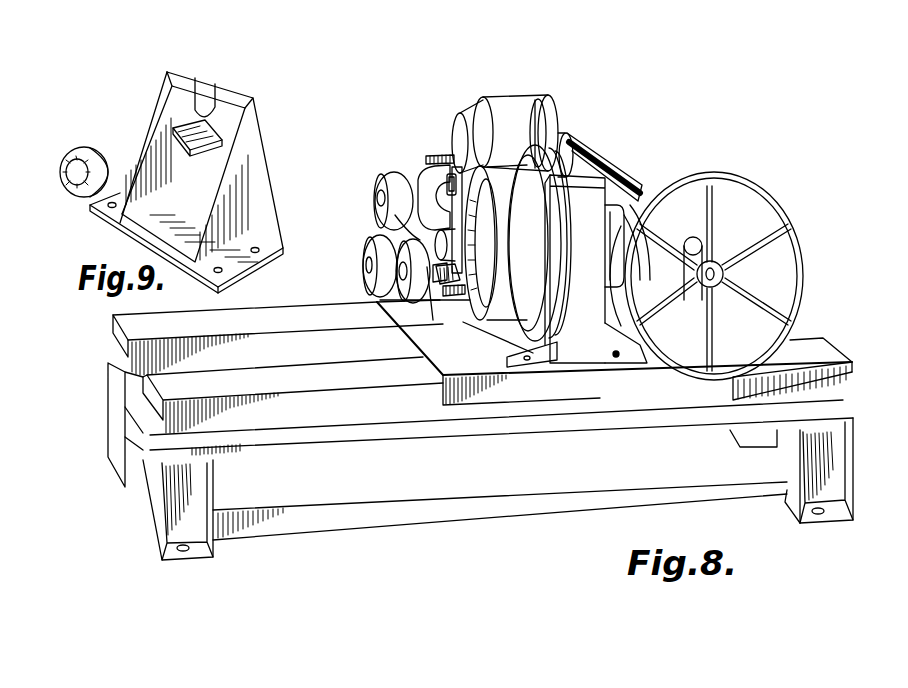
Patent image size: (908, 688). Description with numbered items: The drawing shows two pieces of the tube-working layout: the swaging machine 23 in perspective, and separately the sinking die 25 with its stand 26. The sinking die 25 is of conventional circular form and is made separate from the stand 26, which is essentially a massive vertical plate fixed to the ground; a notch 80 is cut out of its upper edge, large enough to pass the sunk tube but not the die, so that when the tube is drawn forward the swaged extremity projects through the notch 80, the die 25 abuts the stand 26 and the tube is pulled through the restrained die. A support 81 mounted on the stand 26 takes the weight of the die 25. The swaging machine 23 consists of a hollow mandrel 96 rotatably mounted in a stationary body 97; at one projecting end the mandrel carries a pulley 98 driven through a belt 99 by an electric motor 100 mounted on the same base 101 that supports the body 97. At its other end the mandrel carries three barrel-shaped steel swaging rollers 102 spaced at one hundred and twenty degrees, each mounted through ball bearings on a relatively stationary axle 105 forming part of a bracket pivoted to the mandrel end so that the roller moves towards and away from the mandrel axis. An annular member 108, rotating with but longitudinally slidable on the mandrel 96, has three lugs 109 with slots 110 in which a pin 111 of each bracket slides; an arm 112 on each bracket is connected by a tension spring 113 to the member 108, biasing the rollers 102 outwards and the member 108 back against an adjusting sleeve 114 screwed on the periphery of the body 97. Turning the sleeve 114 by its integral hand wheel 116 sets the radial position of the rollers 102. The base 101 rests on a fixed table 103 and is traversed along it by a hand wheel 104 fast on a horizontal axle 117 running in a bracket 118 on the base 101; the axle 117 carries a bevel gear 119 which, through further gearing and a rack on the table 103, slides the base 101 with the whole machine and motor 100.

In FIG. 8, the swaging machine 23 is at (338, 187).
In FIG. 9, the sinking die 25 is at (93, 146).
In FIG. 9, the stand 26 is at (200, 97).
In FIG. 9, the notch 80 is at (208, 103).
In FIG. 9, the support 81 is at (183, 154).
In FIG. 8, the hollow mandrel 96 is at (447, 243).
In FIG. 8, the stationary body 97 is at (574, 306).
In FIG. 8, the pulley 98 is at (622, 228).
In FIG. 8, the belt 99 is at (600, 147).
In FIG. 8, the electric motor 100 is at (515, 96).
In FIG. 8, the base 101 is at (503, 393).
In FIG. 8, the swaging rollers 102 is at (376, 198).
In FIG. 8, the fixed table 103 is at (362, 392).
In FIG. 8, the hand wheel 104 is at (708, 173).
In FIG. 8, the axle 105 is at (385, 212).
In FIG. 8, the annular member 108 is at (460, 130).
In FIG. 8, the lugs 109 is at (462, 272).
In FIG. 8, the slots 110 is at (490, 218).
In FIG. 8, the pin 111 is at (425, 170).
In FIG. 8, the arm 112 is at (447, 178).
In FIG. 8, the tension spring 113 is at (440, 156).
In FIG. 8, the adjusting sleeve 114 is at (520, 133).
In FIG. 8, the hand wheel 116 is at (552, 222).
In FIG. 8, the axle 117 is at (724, 272).
In FIG. 8, the bracket 118 is at (658, 353).
In FIG. 8, the bevel gear 119 is at (692, 238).